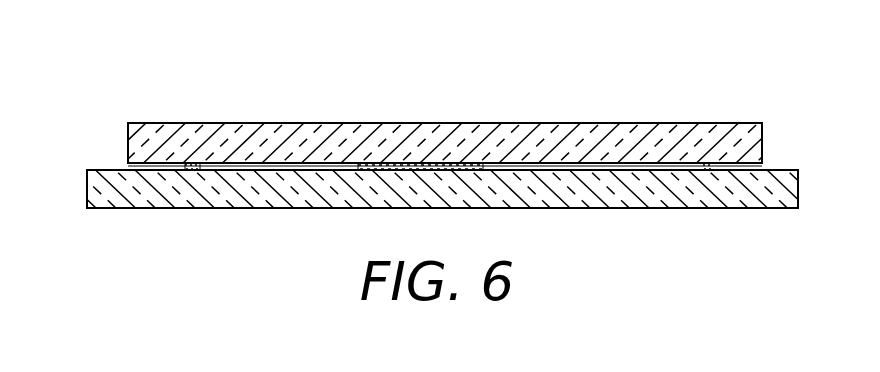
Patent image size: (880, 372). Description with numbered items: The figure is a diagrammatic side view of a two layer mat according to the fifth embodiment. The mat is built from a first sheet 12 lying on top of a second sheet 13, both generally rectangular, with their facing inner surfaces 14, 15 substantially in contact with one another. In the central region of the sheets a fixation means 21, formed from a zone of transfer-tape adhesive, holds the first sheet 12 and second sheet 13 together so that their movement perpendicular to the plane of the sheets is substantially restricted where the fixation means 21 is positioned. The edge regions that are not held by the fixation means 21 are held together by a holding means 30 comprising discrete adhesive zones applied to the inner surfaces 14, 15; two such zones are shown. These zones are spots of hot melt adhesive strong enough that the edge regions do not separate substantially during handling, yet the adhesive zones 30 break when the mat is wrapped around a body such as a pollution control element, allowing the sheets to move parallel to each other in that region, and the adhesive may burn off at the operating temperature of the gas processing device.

The first sheet 12 is at (618, 140).
The second sheet 13 is at (695, 200).
The inner surface of the first sheet 14 is at (150, 165).
The inner surface of the second sheet 15 is at (103, 170).
The fixation means 21 is at (414, 166).
The holding means 30 is at (188, 170).